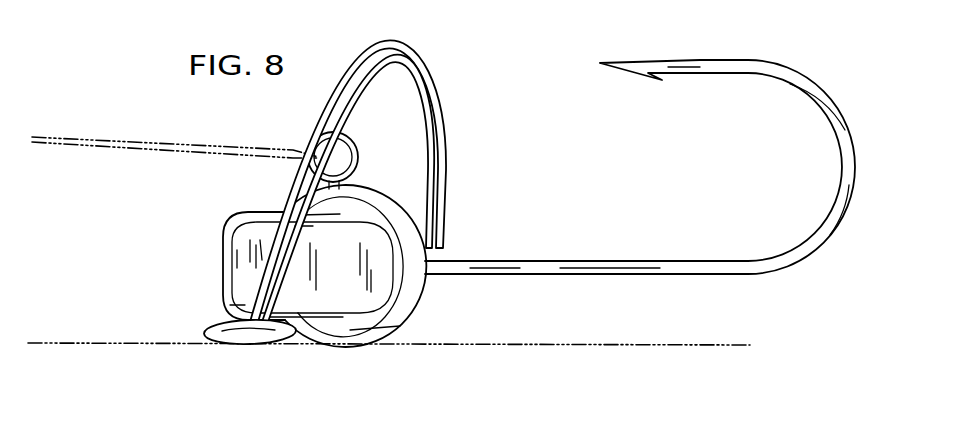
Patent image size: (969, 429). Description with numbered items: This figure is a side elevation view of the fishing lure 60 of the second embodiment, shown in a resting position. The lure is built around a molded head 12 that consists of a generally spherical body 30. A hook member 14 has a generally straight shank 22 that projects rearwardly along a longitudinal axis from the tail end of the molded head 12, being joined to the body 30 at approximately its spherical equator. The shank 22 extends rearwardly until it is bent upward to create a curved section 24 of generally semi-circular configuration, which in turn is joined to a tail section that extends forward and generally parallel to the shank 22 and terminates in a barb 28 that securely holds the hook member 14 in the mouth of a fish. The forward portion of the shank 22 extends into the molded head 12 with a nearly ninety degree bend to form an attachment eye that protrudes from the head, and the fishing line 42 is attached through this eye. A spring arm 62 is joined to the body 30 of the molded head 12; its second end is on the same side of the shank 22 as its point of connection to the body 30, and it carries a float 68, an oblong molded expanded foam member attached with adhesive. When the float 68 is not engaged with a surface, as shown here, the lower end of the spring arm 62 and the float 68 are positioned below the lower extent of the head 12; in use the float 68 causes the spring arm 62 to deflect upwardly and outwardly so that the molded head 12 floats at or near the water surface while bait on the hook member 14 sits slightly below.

The molded head 12 is at (342, 268).
The hook member 14 is at (640, 193).
The shank 22 is at (538, 264).
The curved section 24 is at (842, 166).
The barb 28 is at (628, 58).
The body 30 is at (413, 315).
The fishing line 42 is at (100, 137).
The fishing lure 60 is at (503, 64).
The spring arm 62 is at (95, 424).
The float 68 is at (246, 342).